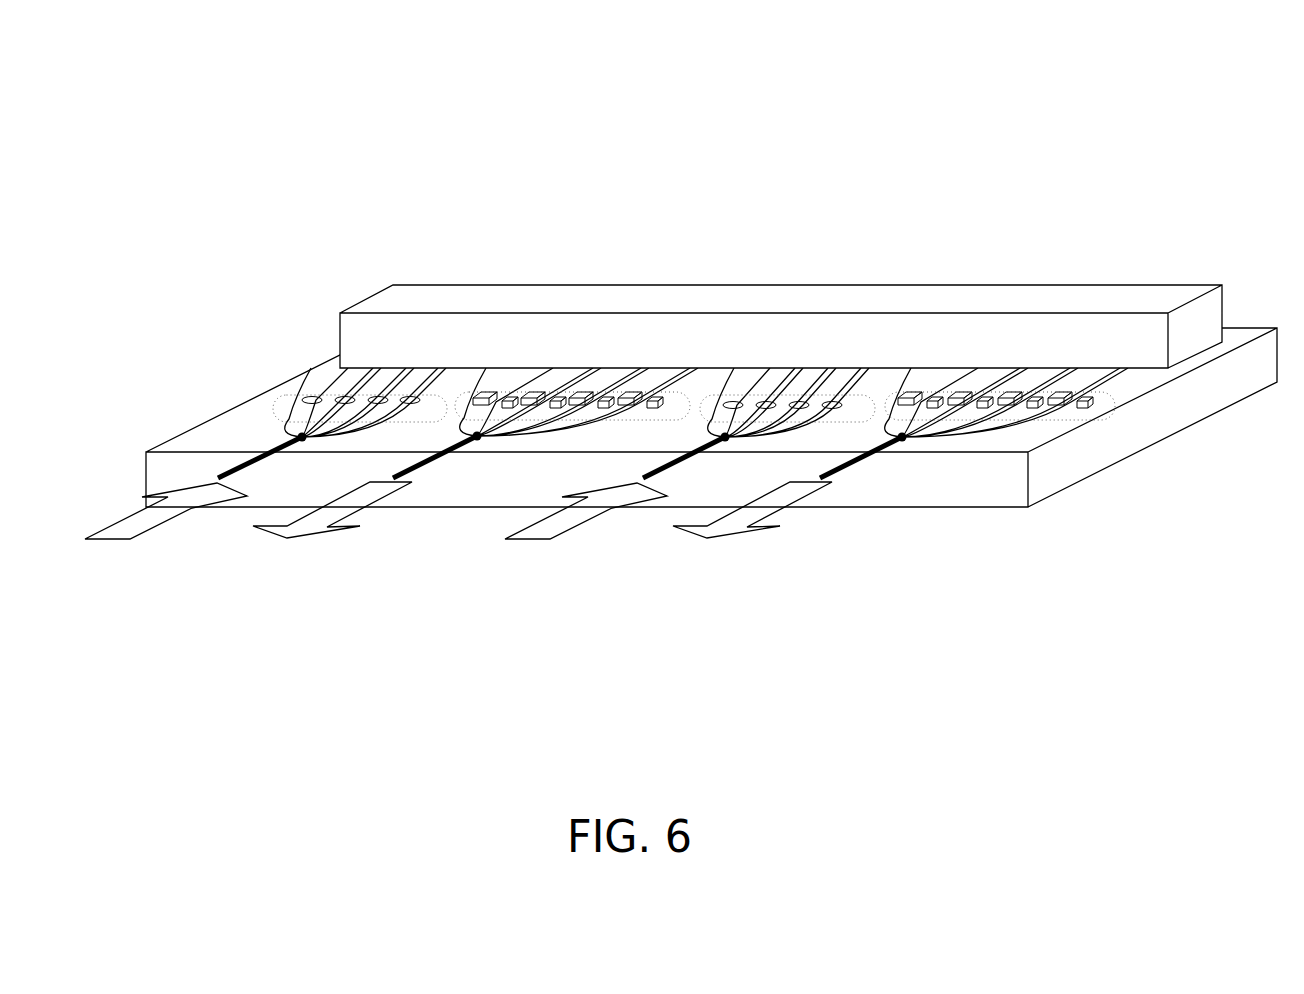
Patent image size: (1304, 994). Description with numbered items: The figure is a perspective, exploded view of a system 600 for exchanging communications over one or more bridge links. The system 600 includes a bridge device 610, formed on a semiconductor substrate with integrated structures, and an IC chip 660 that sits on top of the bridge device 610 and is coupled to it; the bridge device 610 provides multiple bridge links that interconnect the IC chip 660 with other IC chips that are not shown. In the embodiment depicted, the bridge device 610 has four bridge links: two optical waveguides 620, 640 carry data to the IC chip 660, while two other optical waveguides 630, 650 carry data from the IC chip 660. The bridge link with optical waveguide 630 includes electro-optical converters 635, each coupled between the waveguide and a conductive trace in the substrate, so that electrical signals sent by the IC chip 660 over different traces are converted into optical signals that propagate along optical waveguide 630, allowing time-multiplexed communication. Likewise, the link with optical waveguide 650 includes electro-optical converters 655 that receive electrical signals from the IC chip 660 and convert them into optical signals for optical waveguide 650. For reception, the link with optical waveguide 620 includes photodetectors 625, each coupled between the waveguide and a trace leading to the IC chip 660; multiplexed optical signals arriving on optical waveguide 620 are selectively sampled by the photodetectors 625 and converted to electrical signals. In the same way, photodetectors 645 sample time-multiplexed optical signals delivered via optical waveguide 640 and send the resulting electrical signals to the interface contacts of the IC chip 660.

The system 600 is at (250, 107).
The bridge device 610 is at (905, 508).
The optical waveguide 620 is at (166, 526).
The photodetectors 625 is at (303, 393).
The optical waveguide 630 is at (332, 526).
The electro-optical converters 635 is at (613, 418).
The optical waveguide 640 is at (586, 526).
The photodetectors 645 is at (826, 420).
The optical waveguide 650 is at (752, 526).
The electro-optical converters 655 is at (1028, 422).
The IC chip 660 is at (781, 326).